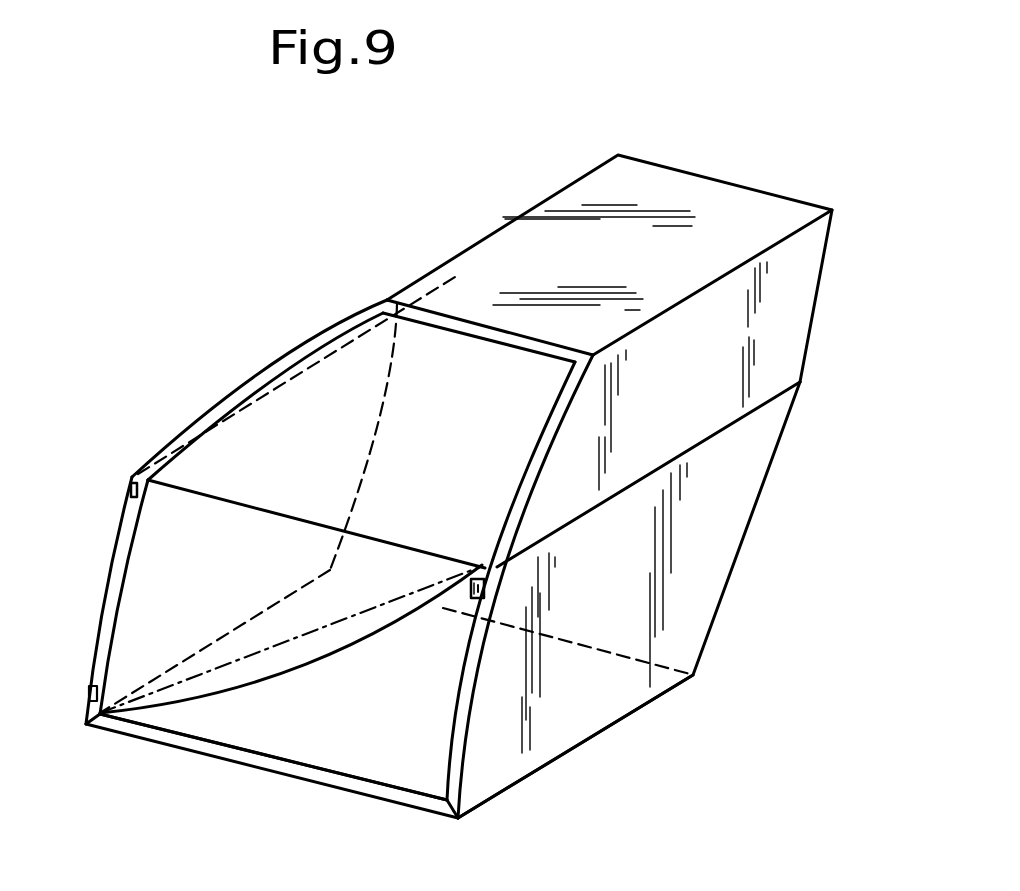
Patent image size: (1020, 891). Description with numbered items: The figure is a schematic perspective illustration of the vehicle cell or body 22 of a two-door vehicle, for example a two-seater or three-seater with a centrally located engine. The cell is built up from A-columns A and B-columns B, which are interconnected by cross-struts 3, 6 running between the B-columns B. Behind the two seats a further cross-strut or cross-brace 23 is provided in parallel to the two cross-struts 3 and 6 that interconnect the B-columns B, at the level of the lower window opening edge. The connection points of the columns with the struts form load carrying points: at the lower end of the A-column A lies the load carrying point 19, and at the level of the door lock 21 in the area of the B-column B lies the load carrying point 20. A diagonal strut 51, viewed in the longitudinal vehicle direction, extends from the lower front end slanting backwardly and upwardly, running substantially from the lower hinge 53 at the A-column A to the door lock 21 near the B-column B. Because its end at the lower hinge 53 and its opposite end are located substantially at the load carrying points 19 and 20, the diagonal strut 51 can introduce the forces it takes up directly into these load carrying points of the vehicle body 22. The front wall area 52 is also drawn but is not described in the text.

The cross-strut 3 is at (572, 753).
The cross-strut 6 is at (795, 237).
The load carrying point 19 is at (85, 725).
The load carrying point 20 is at (487, 573).
The door lock 21 is at (485, 598).
The vehicle cell or body 22 is at (788, 567).
The cross-strut or cross-brace 23 is at (743, 418).
The diagonal strut 51 is at (270, 680).
The front wall 52 is at (360, 740).
The lower hinge 53 is at (88, 693).
The A-column A is at (378, 410).
The B-column B is at (823, 303).